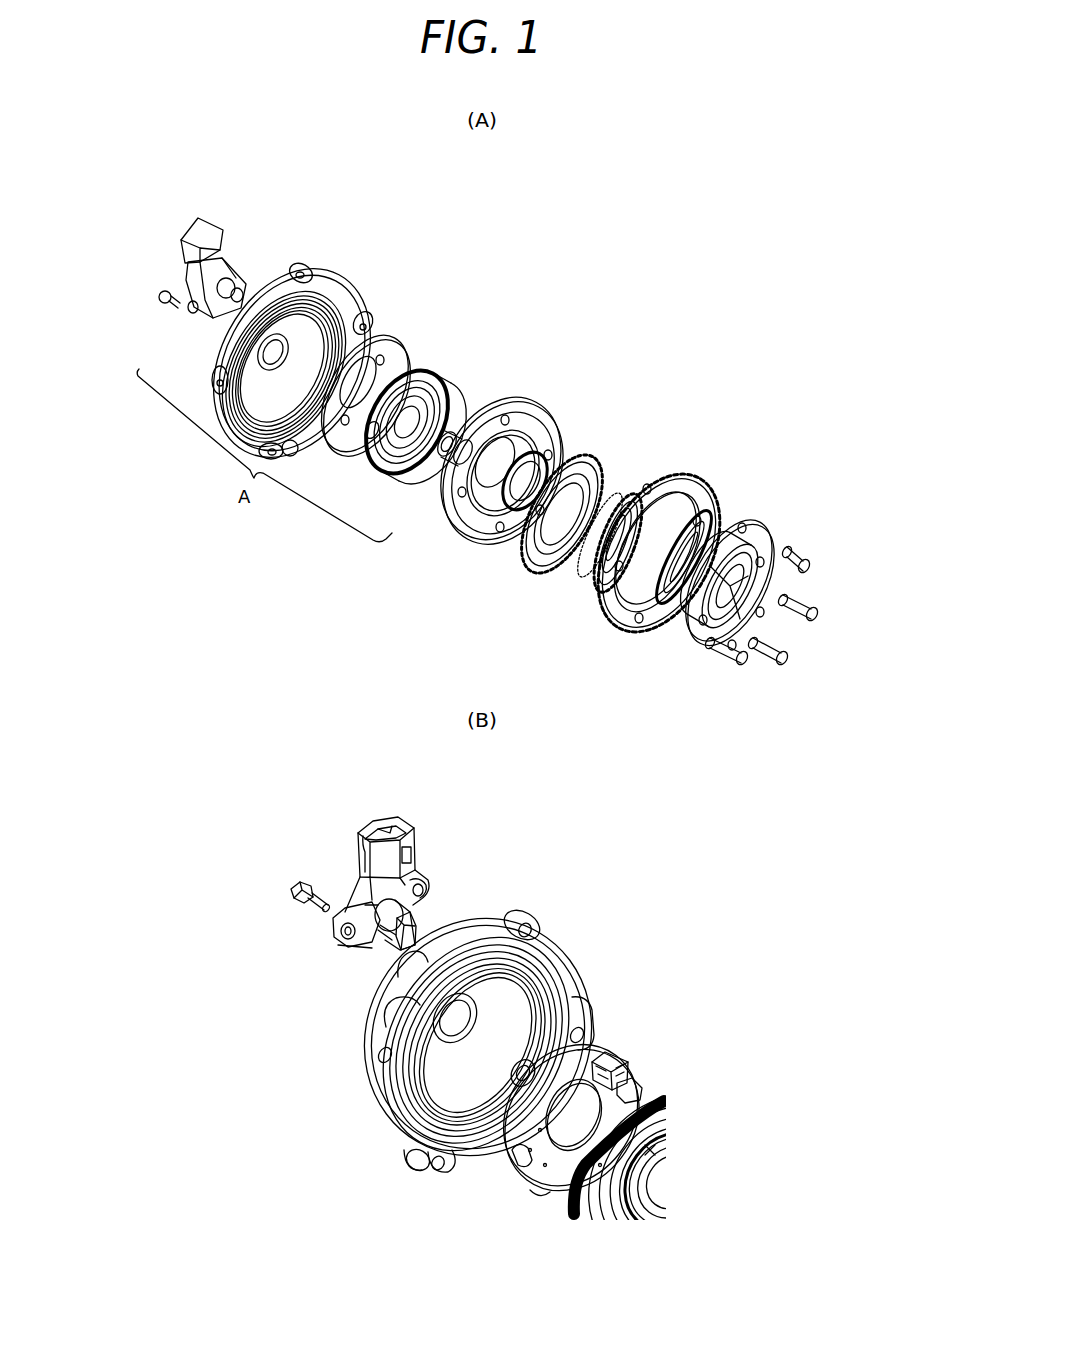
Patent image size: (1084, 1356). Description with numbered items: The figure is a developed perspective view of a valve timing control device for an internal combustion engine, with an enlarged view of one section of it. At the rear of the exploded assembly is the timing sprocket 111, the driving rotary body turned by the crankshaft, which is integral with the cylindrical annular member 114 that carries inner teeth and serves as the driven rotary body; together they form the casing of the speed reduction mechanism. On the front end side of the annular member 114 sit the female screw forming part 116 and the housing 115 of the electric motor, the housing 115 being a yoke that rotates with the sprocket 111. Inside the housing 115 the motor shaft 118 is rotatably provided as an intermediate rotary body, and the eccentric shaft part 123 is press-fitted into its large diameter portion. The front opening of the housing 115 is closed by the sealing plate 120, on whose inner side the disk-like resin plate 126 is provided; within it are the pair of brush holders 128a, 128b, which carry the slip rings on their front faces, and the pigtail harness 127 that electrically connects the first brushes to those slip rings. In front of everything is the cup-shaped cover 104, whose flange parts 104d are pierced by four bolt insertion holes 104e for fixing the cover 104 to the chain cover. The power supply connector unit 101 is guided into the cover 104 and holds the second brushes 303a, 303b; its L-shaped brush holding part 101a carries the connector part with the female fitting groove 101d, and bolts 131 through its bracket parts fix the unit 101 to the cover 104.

The power supply connector unit 101 is at (228, 270).
The brush holding part 101a is at (422, 885).
The female fitting groove 101d is at (385, 818).
The cover 104 is at (320, 280).
The flange parts 104d is at (532, 913).
The bolt insertion holes 104e is at (540, 930).
The timing sprocket 111 is at (688, 477).
The annular member 114 is at (723, 527).
The housing 115 is at (517, 410).
The female screw forming part 116 is at (540, 430).
The motor shaft 118 is at (440, 412).
The sealing plate 120 is at (400, 340).
The eccentric shaft part 123 is at (660, 1163).
The resin plate 126 is at (610, 1060).
The pigtail harness 127 is at (525, 1153).
The brush holder 128a is at (613, 1063).
The brush holder 128b is at (537, 1197).
The bolts 131 is at (347, 868).
The second brush 303a is at (400, 953).
The second brush 303b is at (413, 922).